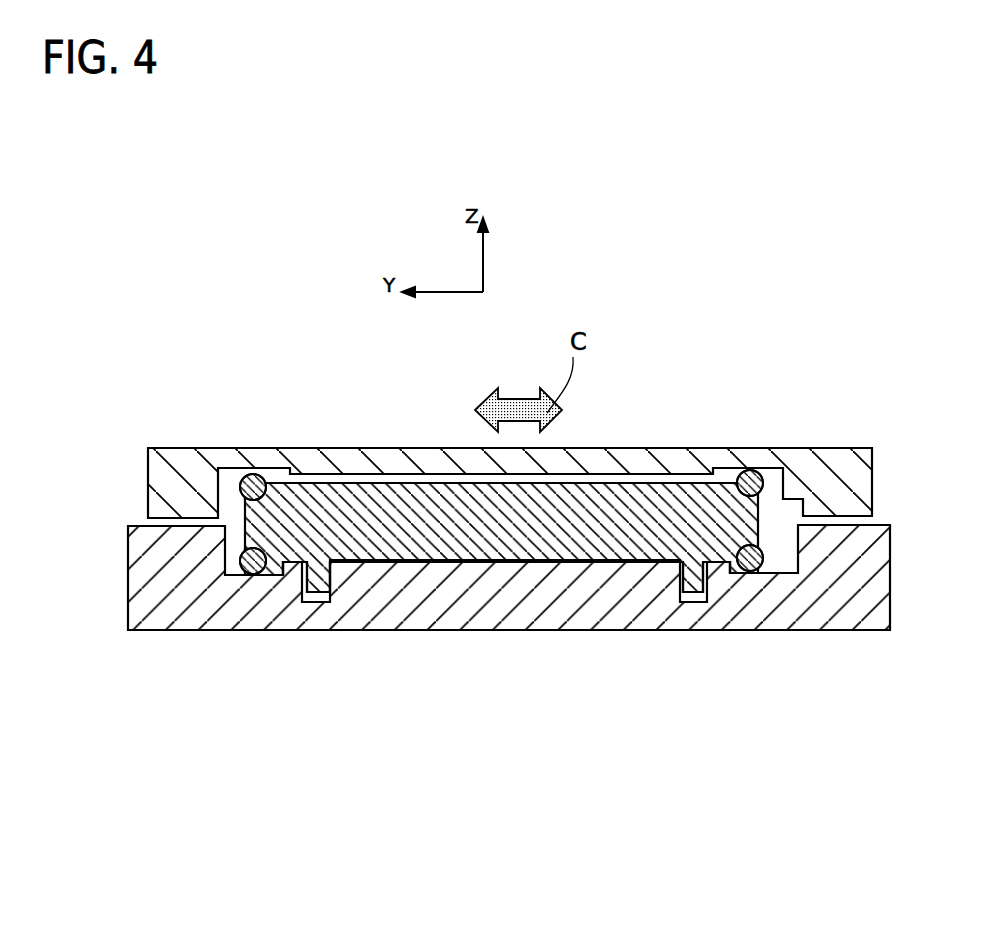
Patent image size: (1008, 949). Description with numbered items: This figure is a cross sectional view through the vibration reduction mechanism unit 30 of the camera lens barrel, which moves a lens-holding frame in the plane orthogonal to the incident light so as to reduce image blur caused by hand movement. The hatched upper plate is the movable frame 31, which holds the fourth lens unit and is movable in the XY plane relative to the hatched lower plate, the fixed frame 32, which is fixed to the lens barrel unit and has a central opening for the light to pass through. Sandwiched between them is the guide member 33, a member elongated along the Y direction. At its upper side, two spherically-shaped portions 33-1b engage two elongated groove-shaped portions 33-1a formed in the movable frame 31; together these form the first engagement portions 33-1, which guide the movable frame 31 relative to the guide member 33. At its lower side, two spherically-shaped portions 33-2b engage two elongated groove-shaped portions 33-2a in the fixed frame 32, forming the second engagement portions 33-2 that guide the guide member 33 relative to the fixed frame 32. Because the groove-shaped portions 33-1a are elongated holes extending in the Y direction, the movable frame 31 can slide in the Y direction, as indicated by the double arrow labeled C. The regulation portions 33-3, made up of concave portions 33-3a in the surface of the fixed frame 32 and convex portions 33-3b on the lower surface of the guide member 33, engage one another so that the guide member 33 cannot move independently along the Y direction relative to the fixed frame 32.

The vibration reduction mechanism unit 30 is at (485, 577).
The movable frame 31 is at (815, 470).
The fixed frame 32 is at (152, 613).
The guide member 33 is at (386, 505).
The first engagement portions 33-1 is at (210, 408).
The groove-shaped portions 33-1a is at (248, 476).
The spherically-shaped portions 33-1b is at (252, 498).
The second engagement portions 33-2 is at (183, 693).
The groove-shaped portions 33-2a is at (238, 582).
The spherically-shaped portions 33-2b is at (255, 576).
The regulation portions 33-3 is at (538, 650).
The concave portions 33-3a is at (296, 572).
The convex portions 33-3b is at (452, 687).